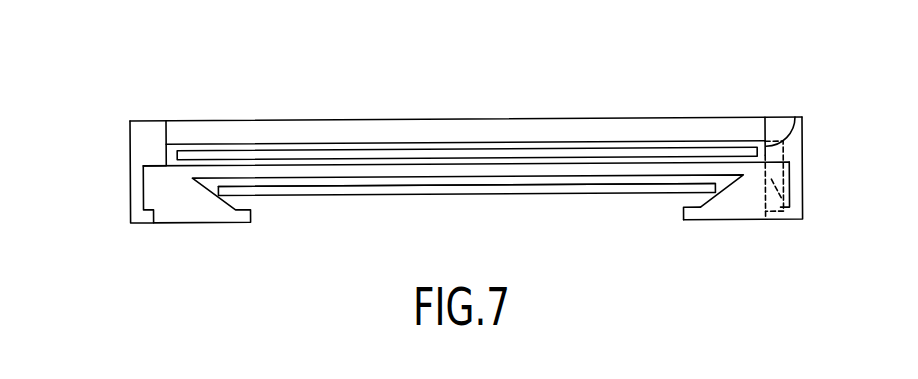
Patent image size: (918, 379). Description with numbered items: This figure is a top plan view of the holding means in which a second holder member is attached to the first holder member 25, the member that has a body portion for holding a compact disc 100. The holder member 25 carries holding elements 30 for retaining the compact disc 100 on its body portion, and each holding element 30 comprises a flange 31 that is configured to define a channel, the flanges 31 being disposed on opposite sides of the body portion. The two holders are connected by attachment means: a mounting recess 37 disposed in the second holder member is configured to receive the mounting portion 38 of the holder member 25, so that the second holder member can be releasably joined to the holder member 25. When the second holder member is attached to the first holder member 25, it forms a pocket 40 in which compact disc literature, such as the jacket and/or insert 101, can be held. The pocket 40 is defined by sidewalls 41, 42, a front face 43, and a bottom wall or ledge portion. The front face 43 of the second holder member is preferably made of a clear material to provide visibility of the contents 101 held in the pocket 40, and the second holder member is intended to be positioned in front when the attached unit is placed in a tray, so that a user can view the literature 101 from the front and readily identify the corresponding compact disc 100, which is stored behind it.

The holder member 25 is at (273, 196).
The holding element 30 is at (738, 203).
The flange 31 is at (690, 218).
The mounting recess 37 is at (795, 160).
The mounting portion 38 is at (780, 214).
The pocket 40 is at (756, 133).
The sidewall 41 is at (791, 118).
The sidewall 42 is at (167, 157).
The front face 43 is at (222, 119).
The compact disc 100 is at (555, 189).
The jacket and/or insert 101 is at (411, 133).